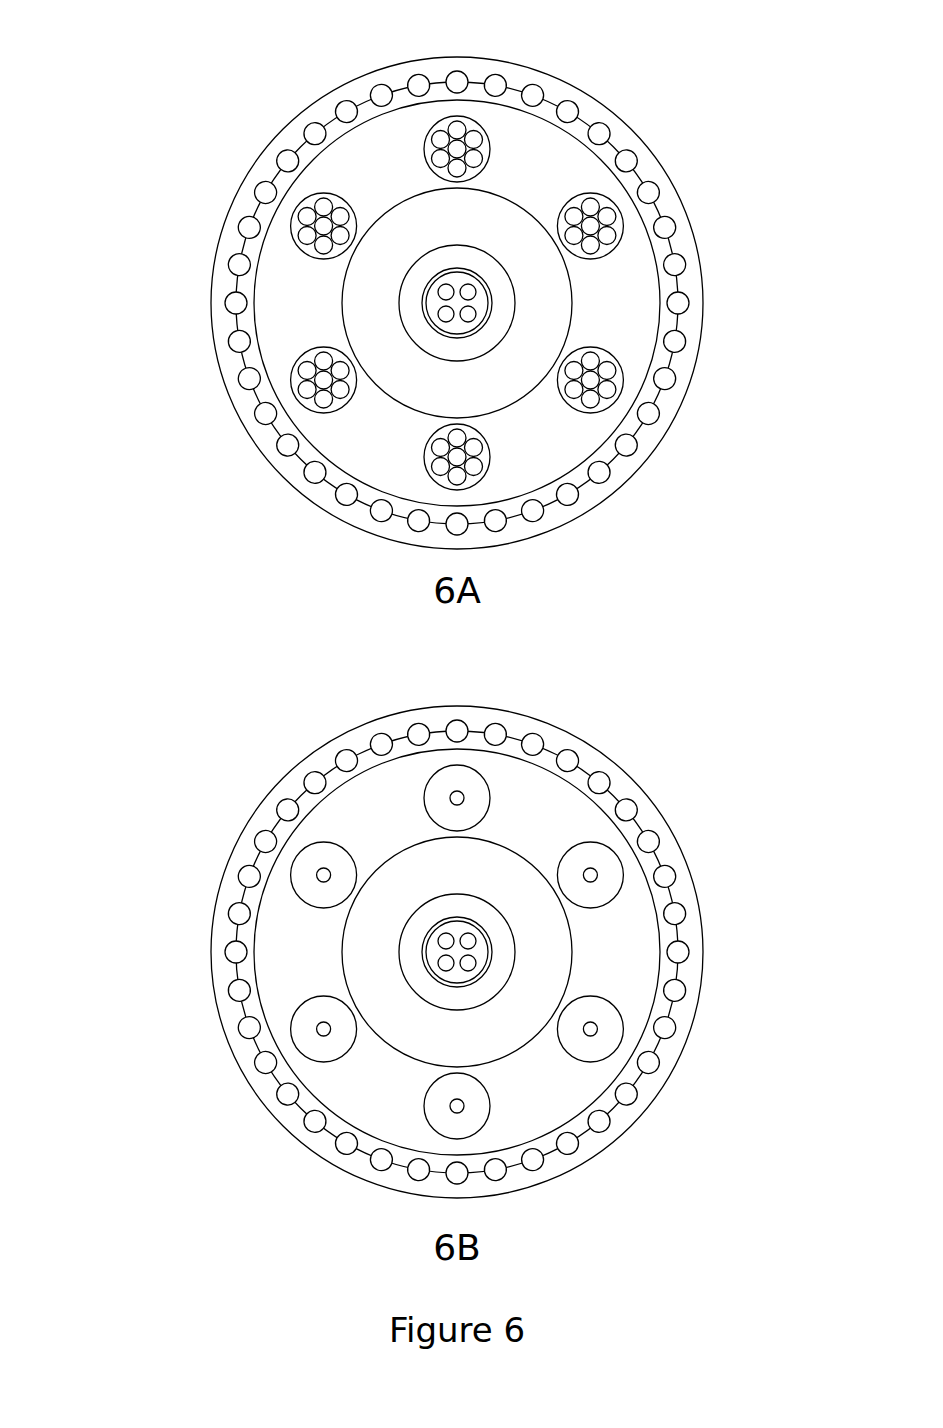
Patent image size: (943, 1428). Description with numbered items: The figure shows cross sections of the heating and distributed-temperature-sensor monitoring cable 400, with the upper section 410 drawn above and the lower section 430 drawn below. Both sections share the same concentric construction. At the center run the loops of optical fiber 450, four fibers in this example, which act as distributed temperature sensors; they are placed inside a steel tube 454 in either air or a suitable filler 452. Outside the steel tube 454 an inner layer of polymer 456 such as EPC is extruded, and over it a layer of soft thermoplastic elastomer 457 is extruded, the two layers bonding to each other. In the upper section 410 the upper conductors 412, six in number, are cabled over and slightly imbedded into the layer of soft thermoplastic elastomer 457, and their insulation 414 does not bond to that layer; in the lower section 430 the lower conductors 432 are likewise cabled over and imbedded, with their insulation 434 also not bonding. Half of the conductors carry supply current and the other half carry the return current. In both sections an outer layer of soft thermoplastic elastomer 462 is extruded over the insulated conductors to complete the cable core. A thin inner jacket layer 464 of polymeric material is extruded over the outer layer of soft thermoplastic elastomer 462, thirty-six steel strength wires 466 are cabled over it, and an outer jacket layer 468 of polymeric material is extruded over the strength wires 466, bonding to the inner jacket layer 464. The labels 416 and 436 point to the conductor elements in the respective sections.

In FIG. 6A, the heating and distributed-temperature-sensor monitoring cable 400 is at (60, 30).
In FIG. 6A, the upper section 410 is at (165, 89).
In FIG. 6A, the upper conductors 412 is at (368, 283).
In FIG. 6A, the insulation 414 is at (311, 223).
In FIG. 6A, the bundle jacket 416 is at (314, 205).
In FIG. 6B, the lower section 430 is at (165, 734).
In FIG. 6B, the lower conductors 432 is at (368, 930).
In FIG. 6B, the insulation 434 is at (322, 873).
In FIG. 6B, the conductor insulation 436 is at (325, 848).
In FIG. 6A, the optical fiber 450 is at (446, 285).
In FIG. 6B, the optical fiber 450 is at (446, 934).
In FIG. 6A, the filler 452 is at (466, 281).
In FIG. 6B, the filler 452 is at (466, 930).
In FIG. 6A, the steel tube 454 is at (492, 290).
In FIG. 6B, the steel tube 454 is at (492, 939).
In FIG. 6A, the inner layer of polymer 456 is at (487, 340).
In FIG. 6B, the inner layer of polymer 456 is at (487, 989).
In FIG. 6A, the layer of soft thermoplastic elastomer 457 is at (480, 393).
In FIG. 6B, the layer of soft thermoplastic elastomer 457 is at (480, 1042).
In FIG. 6A, the outer layer of soft thermoplastic elastomer 462 is at (283, 337).
In FIG. 6B, the outer layer of soft thermoplastic elastomer 462 is at (283, 986).
In FIG. 6A, the inner jacket layer 464 is at (610, 133).
In FIG. 6B, the inner jacket layer 464 is at (610, 782).
In FIG. 6A, the steel strength wires 466 is at (673, 265).
In FIG. 6B, the steel strength wires 466 is at (673, 914).
In FIG. 6A, the outer jacket layer 468 is at (687, 363).
In FIG. 6B, the outer jacket layer 468 is at (687, 1012).